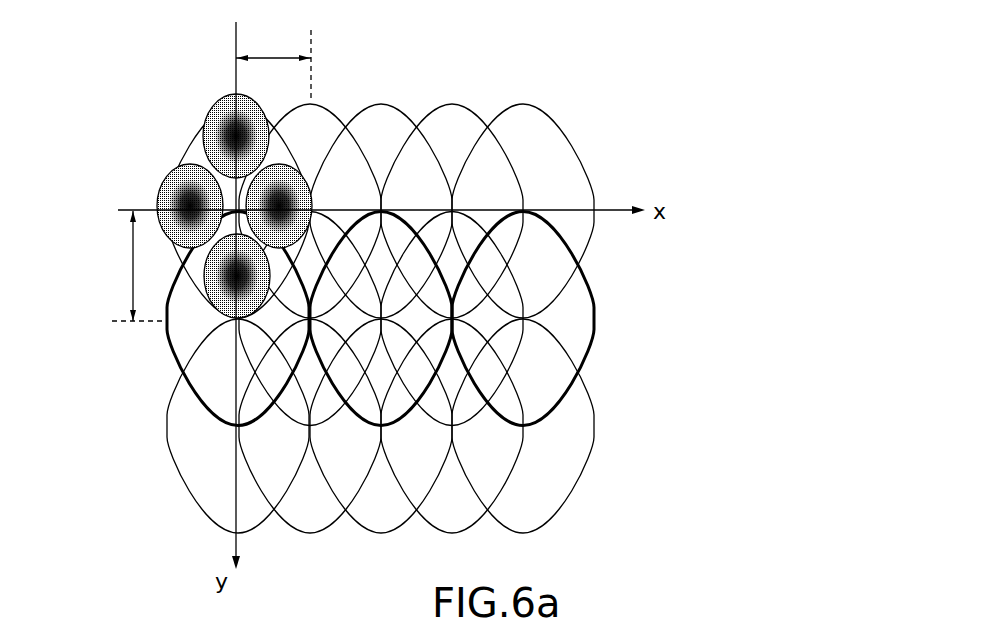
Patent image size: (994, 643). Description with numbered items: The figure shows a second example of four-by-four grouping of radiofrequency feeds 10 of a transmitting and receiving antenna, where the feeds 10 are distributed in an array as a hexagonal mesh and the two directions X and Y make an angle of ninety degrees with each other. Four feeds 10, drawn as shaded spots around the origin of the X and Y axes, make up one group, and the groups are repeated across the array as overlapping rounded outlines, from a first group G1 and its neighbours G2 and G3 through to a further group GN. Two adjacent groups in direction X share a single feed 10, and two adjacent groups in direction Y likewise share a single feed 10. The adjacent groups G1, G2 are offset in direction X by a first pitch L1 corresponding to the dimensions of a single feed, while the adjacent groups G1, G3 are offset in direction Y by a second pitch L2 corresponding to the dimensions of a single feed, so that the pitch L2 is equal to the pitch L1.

The radiofrequency feed 10 is at (167, 170).
The first group G1 is at (200, 157).
The second group G2 is at (317, 120).
The third group G3 is at (190, 337).
The Nth group GN is at (558, 492).
The first pitch L1 is at (273, 65).
The second pitch L2 is at (131, 266).